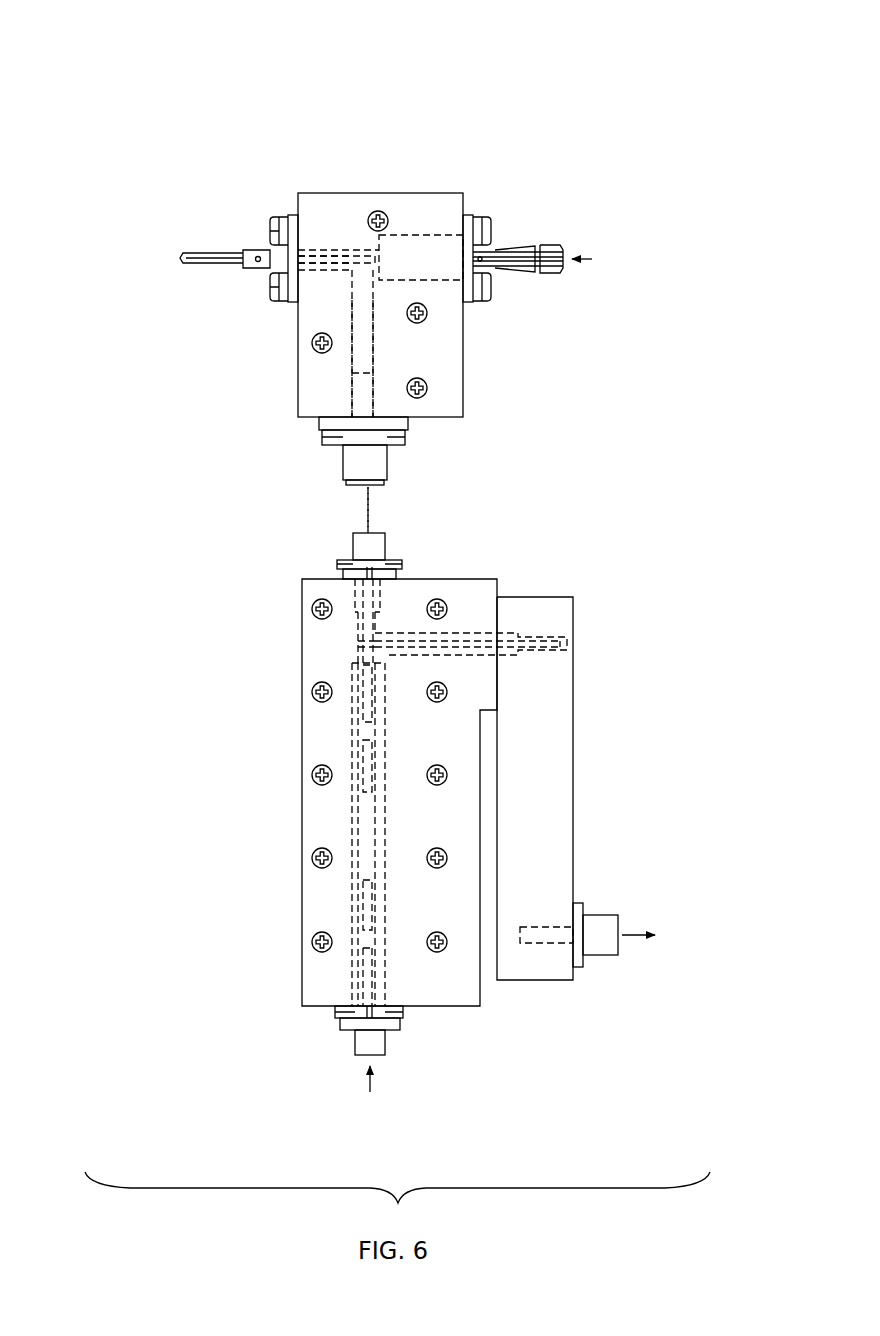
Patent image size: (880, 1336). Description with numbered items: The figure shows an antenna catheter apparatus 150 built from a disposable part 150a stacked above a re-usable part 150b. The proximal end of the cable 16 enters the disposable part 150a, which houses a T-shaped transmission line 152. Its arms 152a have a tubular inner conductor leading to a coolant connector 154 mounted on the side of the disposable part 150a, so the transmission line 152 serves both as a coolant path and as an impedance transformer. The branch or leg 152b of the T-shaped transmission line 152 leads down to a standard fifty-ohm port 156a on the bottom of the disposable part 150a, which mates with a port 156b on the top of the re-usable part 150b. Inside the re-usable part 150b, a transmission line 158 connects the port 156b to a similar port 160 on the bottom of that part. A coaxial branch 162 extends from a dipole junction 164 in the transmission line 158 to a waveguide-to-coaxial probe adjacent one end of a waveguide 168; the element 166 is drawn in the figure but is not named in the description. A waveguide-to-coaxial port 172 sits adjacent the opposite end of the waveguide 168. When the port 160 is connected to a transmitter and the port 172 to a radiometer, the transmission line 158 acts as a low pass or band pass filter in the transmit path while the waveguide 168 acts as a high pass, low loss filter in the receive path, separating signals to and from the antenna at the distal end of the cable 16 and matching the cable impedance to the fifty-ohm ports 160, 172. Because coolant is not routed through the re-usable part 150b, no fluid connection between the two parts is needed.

The antenna catheter apparatus 150 is at (104, 62).
The disposable part 150a is at (205, 379).
The re-usable part 150b is at (205, 600).
The cable 16 is at (180, 258).
The T-shaped transmission line 152 is at (334, 243).
The arms 152a is at (345, 272).
The branch or leg 152b is at (375, 355).
The coolant connector 154 is at (505, 252).
The port 156a is at (343, 470).
The mating port 156b is at (353, 550).
The transmission line 158 is at (352, 710).
The port 160 is at (355, 1045).
The coaxial branch 162 is at (462, 633).
The dipole junction 164 is at (355, 648).
The horizontal coaxial channel 166 is at (560, 634).
The waveguide 168 is at (574, 697).
The waveguide-to-coaxial port 172 is at (598, 915).